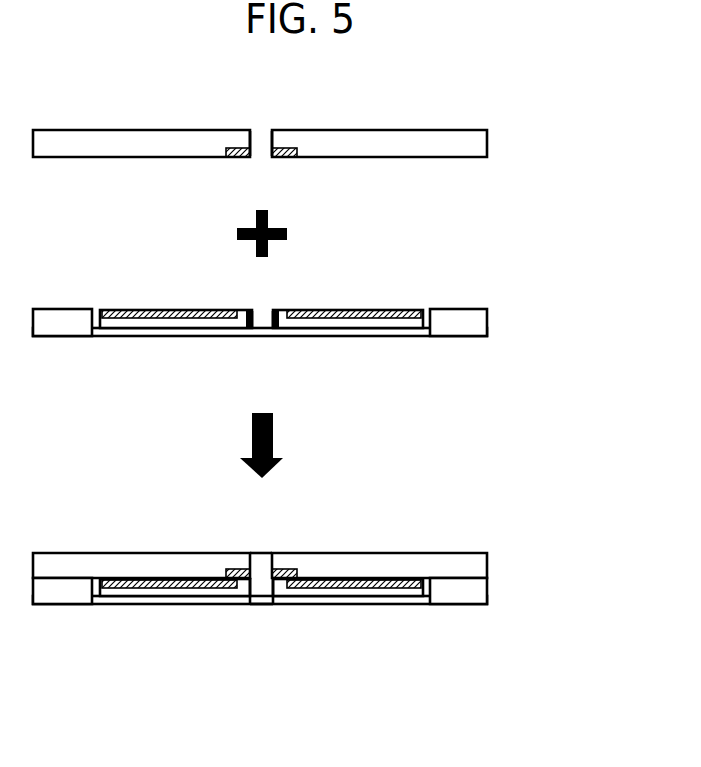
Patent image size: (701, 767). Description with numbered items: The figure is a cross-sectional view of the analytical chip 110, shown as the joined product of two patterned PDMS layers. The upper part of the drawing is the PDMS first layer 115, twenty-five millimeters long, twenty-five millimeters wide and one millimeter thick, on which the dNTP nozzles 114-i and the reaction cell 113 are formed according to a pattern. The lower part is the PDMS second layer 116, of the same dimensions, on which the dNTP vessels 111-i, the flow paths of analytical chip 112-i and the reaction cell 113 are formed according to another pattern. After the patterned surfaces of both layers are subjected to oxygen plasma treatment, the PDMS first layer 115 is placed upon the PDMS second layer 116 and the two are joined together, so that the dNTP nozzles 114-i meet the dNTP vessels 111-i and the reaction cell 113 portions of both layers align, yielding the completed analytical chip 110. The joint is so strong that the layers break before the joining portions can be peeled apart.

The analytical chip 110 is at (475, 591).
The dNTP vessels 111-i is at (207, 310).
The flow paths of analytical chip 112-i is at (425, 338).
The reaction cell 113 is at (258, 142).
The dNTP nozzles 114-i is at (241, 146).
The PDMS first layer 115 is at (300, 116).
The PDMS second layer 116 is at (300, 324).